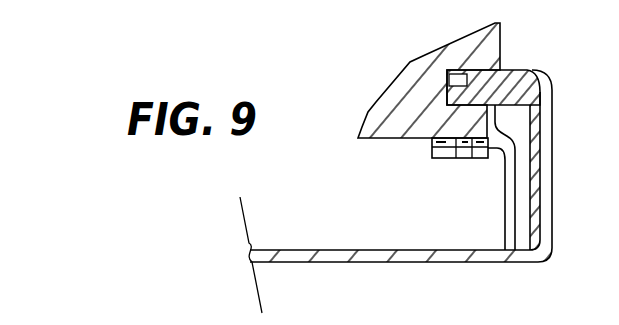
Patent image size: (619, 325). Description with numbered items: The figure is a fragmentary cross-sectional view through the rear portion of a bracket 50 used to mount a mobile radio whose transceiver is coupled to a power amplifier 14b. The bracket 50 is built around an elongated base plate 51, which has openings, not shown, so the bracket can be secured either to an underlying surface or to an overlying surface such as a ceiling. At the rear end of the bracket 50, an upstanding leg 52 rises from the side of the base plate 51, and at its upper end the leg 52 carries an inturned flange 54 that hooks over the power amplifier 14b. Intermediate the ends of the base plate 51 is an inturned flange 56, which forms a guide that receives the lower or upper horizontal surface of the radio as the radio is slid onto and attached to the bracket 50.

The power amplifier 14b is at (396, 91).
The bracket 50 is at (312, 262).
The base plate 51 is at (336, 250).
The upstanding legs 52 is at (553, 189).
The inturned flanges 54 is at (500, 54).
The inturned flanges 56 is at (470, 160).